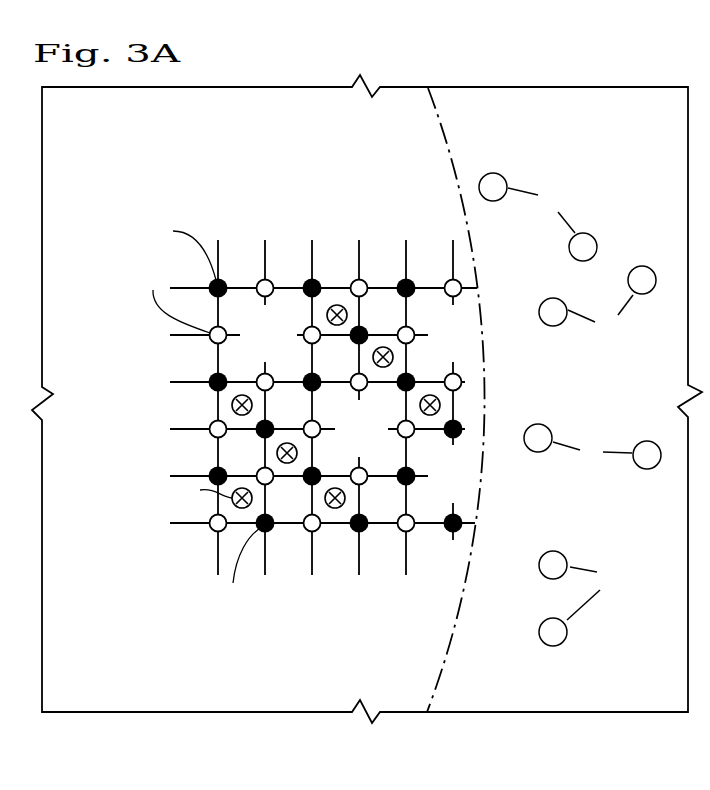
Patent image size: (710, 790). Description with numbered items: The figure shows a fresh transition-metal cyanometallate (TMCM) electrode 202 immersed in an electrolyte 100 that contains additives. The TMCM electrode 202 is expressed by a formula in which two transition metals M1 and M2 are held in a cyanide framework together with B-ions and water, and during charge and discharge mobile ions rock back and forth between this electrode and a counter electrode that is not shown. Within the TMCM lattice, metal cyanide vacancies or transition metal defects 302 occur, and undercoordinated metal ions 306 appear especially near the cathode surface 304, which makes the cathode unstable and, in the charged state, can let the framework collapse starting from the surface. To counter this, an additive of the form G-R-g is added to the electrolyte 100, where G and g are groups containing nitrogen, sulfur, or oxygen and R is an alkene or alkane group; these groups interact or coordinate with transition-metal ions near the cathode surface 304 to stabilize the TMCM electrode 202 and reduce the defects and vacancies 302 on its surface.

The electrolyte 100 is at (590, 159).
The TMCM electrode 202 is at (248, 669).
The metal cyanide vacancies or transition metal defects 302 is at (347, 417).
The cathode surface 304 is at (449, 165).
The undercoordinated metal ions 306 is at (452, 279).